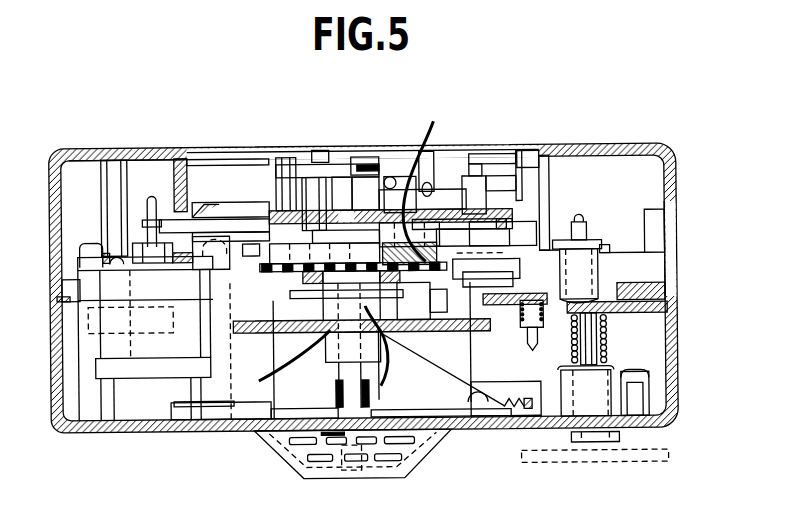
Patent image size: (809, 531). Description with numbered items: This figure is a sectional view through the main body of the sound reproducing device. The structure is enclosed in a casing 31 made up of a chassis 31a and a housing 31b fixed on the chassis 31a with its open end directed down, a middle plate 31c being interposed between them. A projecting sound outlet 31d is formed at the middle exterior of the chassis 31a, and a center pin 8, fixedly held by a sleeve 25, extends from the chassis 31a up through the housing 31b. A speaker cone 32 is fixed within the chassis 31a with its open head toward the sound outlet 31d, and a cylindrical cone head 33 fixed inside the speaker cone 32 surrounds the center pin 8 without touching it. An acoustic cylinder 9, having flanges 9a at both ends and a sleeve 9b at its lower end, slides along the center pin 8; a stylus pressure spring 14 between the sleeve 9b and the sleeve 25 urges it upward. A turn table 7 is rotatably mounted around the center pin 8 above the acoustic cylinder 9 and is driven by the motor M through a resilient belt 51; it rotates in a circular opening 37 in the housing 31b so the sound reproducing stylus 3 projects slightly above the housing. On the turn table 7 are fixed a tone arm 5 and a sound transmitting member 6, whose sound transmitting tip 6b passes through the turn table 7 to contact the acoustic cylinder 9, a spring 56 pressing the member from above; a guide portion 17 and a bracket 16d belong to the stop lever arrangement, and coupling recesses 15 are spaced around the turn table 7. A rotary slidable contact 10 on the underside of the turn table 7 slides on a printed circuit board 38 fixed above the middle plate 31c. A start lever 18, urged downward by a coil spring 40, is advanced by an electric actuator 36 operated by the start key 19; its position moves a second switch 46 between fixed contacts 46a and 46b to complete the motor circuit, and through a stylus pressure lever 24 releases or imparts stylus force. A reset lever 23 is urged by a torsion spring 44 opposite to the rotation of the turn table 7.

The casing 31 is at (72, 432).
The chassis 31a is at (676, 359).
The housing 31b is at (96, 146).
The middle plate 31c is at (422, 332).
The sound outlet 31d is at (400, 478).
The motor M is at (108, 298).
The resilient belt 51 is at (166, 221).
The turn table 7 is at (182, 183).
The circular opening 37 is at (187, 170).
The coupling recesses 15 is at (233, 274).
The sound reproducing stylus 3 is at (318, 150).
The tone arm 5 is at (341, 164).
The sound transmitting member 6 is at (318, 180).
The sound transmitting tip 6b is at (370, 190).
The spring 56 is at (369, 160).
The acoustic cylinder 9 is at (334, 290).
The flanges 9a is at (350, 250).
The sleeve 9b is at (384, 357).
The guide portion 17 is at (442, 200).
The bracket 16d is at (478, 185).
The reset lever 23 is at (547, 172).
The torsion spring 44 is at (590, 270).
The second switch 46 is at (716, 321).
The fixed contact 46a is at (640, 376).
The fixed contact 46b is at (506, 328).
The coil spring 40 is at (608, 355).
The rotary slidable contact 10 is at (500, 272).
The printed circuit board 38 is at (302, 285).
The stylus pressure lever 24 is at (241, 282).
The cone head 33 is at (338, 348).
The stylus pressure spring 14 is at (336, 395).
The center pin 8 is at (346, 447).
The sleeve 25 is at (318, 436).
The speaker cone 32 is at (482, 431).
The start lever 18 is at (588, 404).
The start key 19 is at (611, 460).
The electric actuator 36 is at (620, 444).